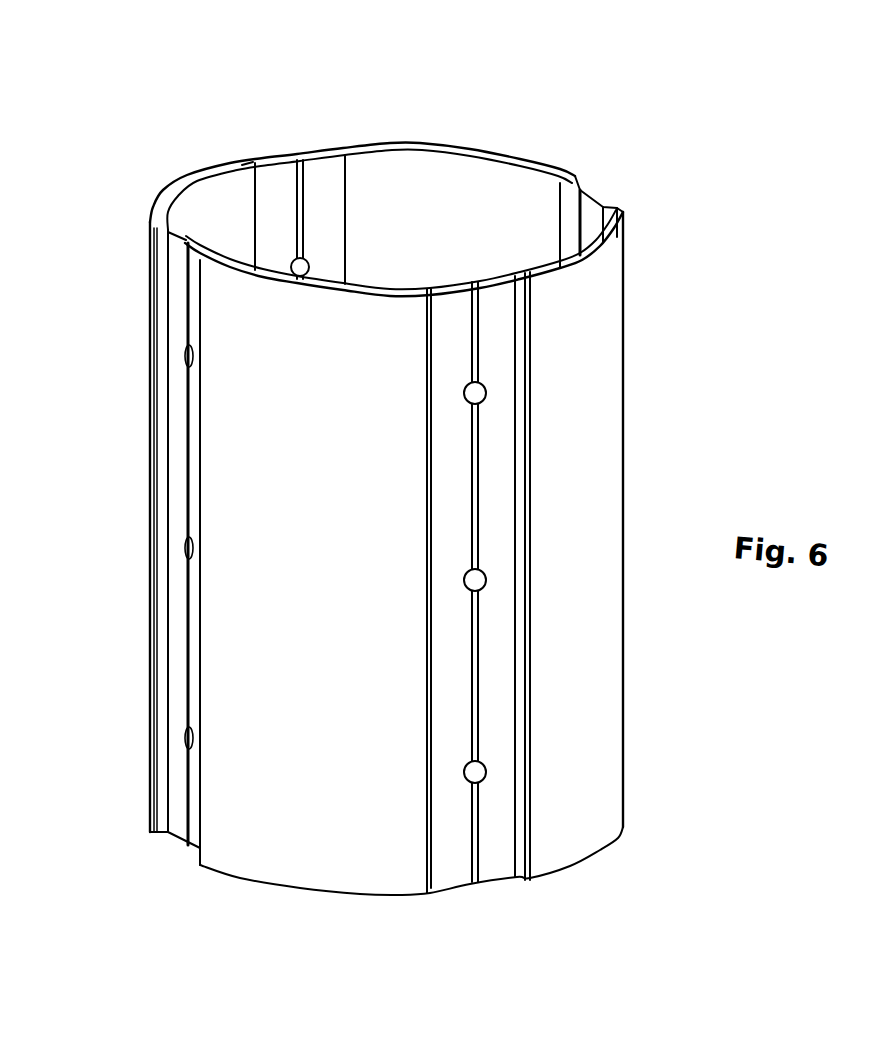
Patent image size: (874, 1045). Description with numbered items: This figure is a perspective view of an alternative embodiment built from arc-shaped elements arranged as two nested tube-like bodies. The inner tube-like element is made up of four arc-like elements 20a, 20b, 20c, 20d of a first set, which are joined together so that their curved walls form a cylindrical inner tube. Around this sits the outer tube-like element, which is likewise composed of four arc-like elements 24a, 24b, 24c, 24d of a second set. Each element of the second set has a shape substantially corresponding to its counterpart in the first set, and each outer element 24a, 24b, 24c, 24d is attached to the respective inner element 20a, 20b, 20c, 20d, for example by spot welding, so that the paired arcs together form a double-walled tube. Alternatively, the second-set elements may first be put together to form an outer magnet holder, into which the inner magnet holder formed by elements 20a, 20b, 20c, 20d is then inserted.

The arc-like element 20a is at (597, 250).
The arc-like element 20b is at (467, 150).
The arc-like element 20c is at (233, 218).
The arc-like element 20d is at (313, 283).
The arc-like element 24a is at (598, 297).
The arc-like element 24b is at (512, 190).
The arc-like element 24c is at (150, 210).
The arc-like element 24d is at (410, 285).